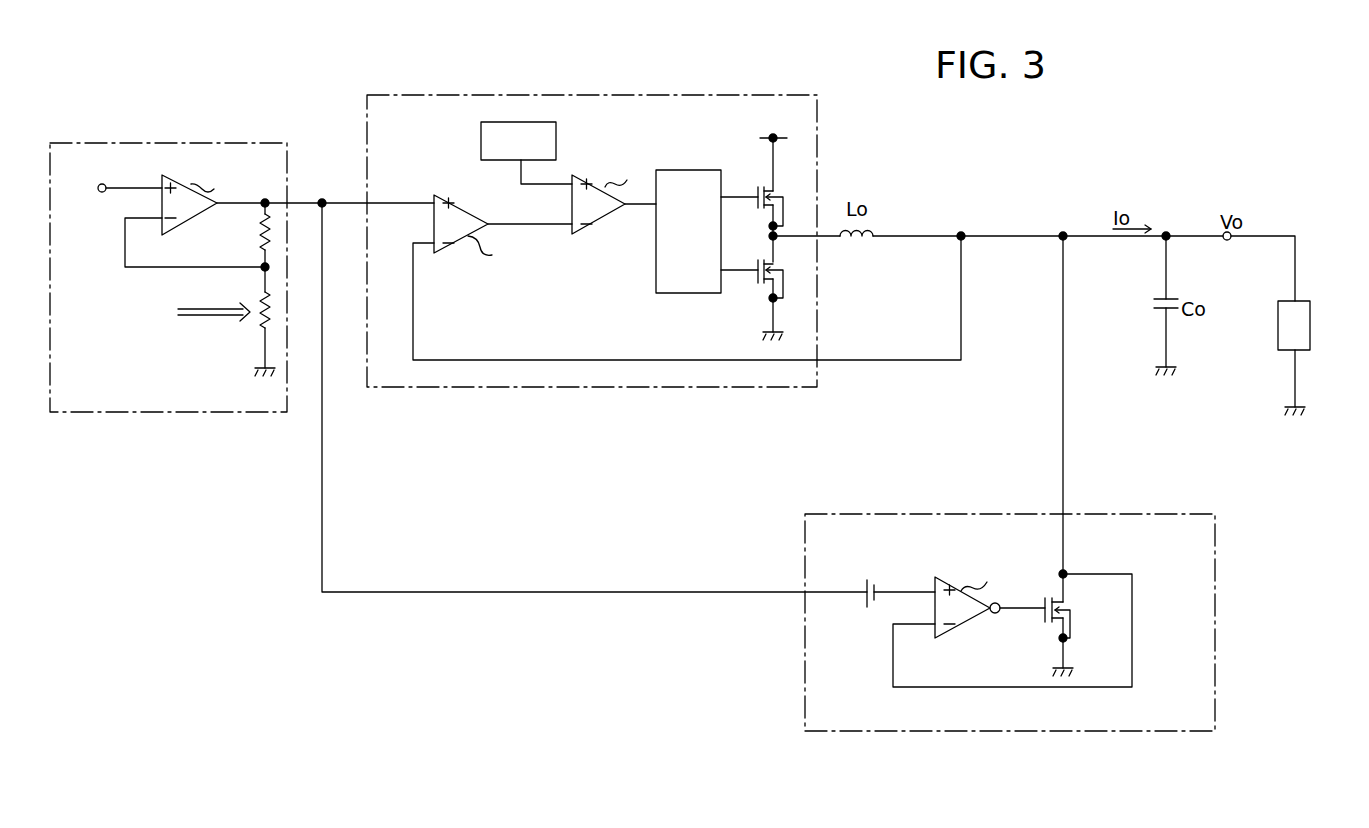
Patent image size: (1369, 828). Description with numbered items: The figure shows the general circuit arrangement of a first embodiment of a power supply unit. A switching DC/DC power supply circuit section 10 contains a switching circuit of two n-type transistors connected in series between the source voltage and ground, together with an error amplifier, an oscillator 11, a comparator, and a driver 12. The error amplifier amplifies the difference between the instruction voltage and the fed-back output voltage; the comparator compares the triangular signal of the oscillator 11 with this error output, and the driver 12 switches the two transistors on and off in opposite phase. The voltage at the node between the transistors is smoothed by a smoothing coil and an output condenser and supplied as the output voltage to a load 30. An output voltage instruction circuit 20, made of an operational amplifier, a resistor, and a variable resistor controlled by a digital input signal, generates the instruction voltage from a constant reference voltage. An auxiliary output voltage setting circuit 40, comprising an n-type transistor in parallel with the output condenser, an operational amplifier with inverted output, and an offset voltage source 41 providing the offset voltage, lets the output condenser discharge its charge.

The switching DC/DC power supply circuit section 10 is at (664, 241).
The oscillator 11 is at (556, 140).
The driver 12 is at (690, 170).
The output voltage instruction circuit 20 is at (175, 143).
The load 30 is at (1310, 321).
The auxiliary output voltage setting circuit 40 is at (1040, 622).
The offset voltage source 41 is at (860, 603).